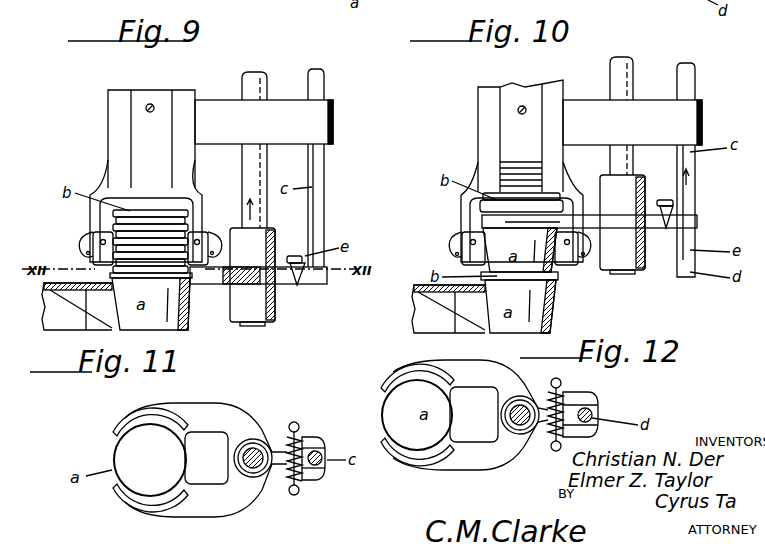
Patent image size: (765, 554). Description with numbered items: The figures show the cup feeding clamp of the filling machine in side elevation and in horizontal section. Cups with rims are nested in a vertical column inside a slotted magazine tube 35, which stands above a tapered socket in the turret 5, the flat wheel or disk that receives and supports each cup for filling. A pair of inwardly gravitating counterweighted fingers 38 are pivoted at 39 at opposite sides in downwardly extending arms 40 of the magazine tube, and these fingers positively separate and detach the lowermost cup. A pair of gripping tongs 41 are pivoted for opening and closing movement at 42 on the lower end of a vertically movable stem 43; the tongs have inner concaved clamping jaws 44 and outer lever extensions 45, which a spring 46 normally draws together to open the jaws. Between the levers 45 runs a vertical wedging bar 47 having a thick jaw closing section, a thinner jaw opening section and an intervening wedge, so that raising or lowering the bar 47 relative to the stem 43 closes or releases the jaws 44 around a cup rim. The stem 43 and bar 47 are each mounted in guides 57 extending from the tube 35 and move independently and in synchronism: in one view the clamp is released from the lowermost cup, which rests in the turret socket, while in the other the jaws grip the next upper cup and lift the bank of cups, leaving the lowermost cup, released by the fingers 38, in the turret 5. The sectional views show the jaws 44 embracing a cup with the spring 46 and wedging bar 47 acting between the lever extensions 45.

In FIG. 9, the turret 5 is at (77, 306).
In FIG. 10, the turret 5 is at (448, 309).
In FIG. 9, the slotted magazine tube 35 is at (113, 99).
In FIG. 10, the slotted magazine tube 35 is at (483, 98).
In FIG. 9, the counterweighted fingers 38 is at (79, 246).
In FIG. 10, the counterweighted fingers 38 is at (449, 248).
In FIG. 9, the pivot 39 is at (100, 240).
In FIG. 10, the pivot 39 is at (470, 240).
In FIG. 9, the downwardly extending arms 40 is at (95, 178).
In FIG. 10, the downwardly extending arms 40 is at (466, 203).
In FIG. 10, the gripping tongs 41 is at (517, 220).
In FIG. 11, the gripping tongs 41 is at (232, 528).
In FIG. 12, the gripping tongs 41 is at (470, 417).
In FIG. 9, the tongs pivot 42 is at (250, 288).
In FIG. 10, the tongs pivot 42 is at (620, 235).
In FIG. 11, the tongs pivot 42 is at (258, 470).
In FIG. 12, the tongs pivot 42 is at (502, 428).
In FIG. 9, the vertically movable stem 43 is at (252, 95).
In FIG. 10, the vertically movable stem 43 is at (620, 80).
In FIG. 11, the concaved clamping jaws 44 is at (124, 422).
In FIG. 12, the concaved clamping jaws 44 is at (396, 376).
In FIG. 9, the lever extensions 45 is at (320, 277).
In FIG. 10, the lever extensions 45 is at (700, 222).
In FIG. 11, the lever extensions 45 is at (314, 438).
In FIG. 12, the lever extensions 45 is at (590, 400).
In FIG. 9, the spring 46 is at (300, 259).
In FIG. 10, the spring 46 is at (670, 210).
In FIG. 11, the spring 46 is at (308, 488).
In FIG. 12, the spring 46 is at (556, 392).
In FIG. 9, the wedging bar 47 is at (326, 175).
In FIG. 10, the wedging bar 47 is at (686, 88).
In FIG. 11, the wedging bar 47 is at (322, 456).
In FIG. 12, the wedging bar 47 is at (592, 412).
In FIG. 9, the guides 57 is at (264, 122).
In FIG. 10, the guides 57 is at (632, 122).